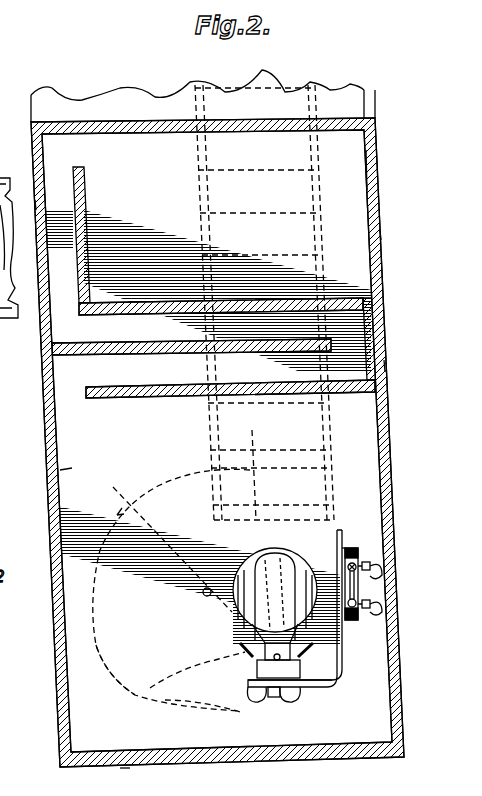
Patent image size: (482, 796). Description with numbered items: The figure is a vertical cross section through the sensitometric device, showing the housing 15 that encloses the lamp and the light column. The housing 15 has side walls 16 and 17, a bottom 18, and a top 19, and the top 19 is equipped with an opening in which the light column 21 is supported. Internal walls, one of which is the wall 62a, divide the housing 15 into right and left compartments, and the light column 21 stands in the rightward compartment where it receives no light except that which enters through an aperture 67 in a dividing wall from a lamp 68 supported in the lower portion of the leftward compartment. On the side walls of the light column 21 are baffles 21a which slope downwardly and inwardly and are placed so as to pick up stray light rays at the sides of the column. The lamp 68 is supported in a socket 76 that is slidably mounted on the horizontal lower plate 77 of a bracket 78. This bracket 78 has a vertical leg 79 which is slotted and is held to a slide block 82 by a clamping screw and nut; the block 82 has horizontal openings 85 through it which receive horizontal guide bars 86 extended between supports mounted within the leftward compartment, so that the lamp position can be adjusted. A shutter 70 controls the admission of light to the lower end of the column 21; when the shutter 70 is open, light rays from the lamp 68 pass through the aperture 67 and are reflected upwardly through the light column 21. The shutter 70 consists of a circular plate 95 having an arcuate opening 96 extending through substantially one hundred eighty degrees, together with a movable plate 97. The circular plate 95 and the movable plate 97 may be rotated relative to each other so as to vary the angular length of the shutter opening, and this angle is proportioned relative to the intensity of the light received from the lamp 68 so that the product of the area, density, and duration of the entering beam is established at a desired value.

The wall 62a is at (143, 160).
The top 19 is at (354, 118).
The light column 21 is at (324, 200).
The baffles 21a is at (283, 252).
The housing 15 is at (393, 380).
The side wall 17 is at (48, 440).
The side wall 16 is at (72, 468).
The bottom 18 is at (122, 768).
The shutter 70 is at (168, 476).
The movable plate 97 is at (162, 545).
The arcuate opening 96 is at (150, 688).
The socket 76 is at (240, 672).
The aperture 67 is at (296, 557).
The lamp 68 is at (240, 620).
The vertical leg 79 is at (340, 540).
The bracket 78 is at (344, 665).
The horizontal lower plate 77 is at (320, 687).
The circular plate 95 is at (240, 705).
The slide block 82 is at (360, 548).
The horizontal openings 85 is at (362, 562).
The horizontal guide bars 86 is at (372, 604).